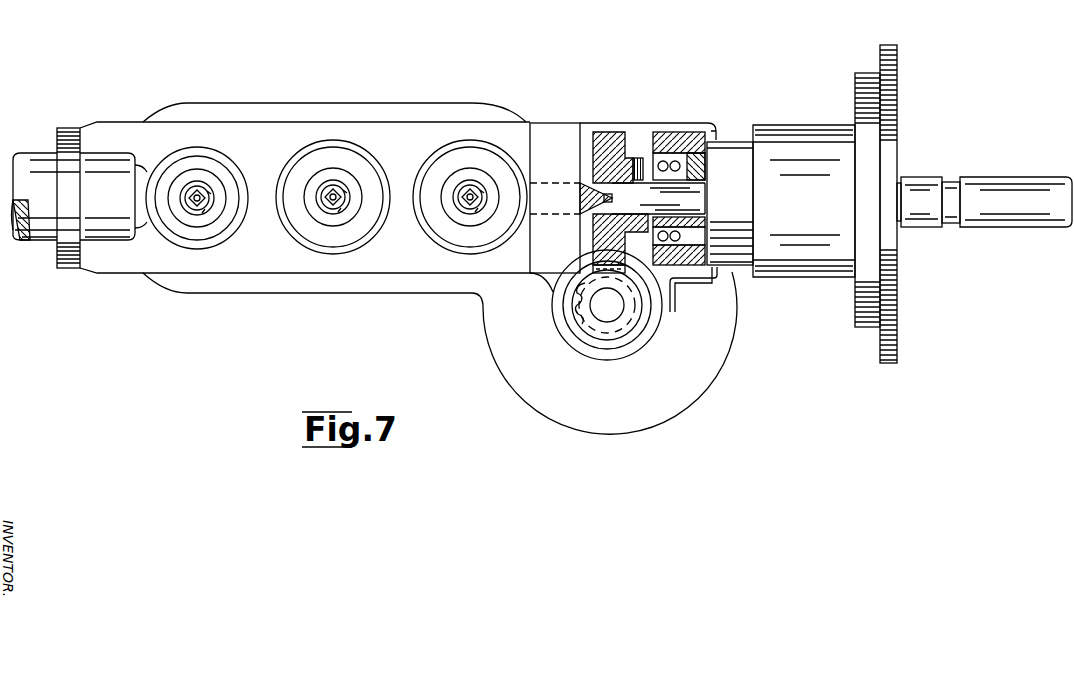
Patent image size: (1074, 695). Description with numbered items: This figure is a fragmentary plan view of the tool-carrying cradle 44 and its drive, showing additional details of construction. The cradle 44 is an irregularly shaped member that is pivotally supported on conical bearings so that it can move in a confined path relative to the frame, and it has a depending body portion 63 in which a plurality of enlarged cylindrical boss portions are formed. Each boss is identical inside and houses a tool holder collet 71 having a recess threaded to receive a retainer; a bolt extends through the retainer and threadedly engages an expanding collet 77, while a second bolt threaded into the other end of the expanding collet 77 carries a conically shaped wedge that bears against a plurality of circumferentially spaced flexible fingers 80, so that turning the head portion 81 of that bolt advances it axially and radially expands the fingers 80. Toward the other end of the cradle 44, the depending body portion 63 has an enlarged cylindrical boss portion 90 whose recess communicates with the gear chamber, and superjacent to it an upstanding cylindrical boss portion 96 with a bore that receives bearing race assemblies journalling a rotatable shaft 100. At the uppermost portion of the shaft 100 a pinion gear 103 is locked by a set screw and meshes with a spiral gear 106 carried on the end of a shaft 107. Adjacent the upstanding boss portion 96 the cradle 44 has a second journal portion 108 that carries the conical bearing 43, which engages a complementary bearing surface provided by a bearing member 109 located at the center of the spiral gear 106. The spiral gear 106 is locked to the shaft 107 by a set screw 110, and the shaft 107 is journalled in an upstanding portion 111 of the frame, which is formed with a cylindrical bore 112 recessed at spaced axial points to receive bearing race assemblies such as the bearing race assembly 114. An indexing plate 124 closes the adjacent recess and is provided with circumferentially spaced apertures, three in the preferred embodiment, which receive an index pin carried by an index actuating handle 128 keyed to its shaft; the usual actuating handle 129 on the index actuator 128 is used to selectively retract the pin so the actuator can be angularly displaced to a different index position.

The cradle 44 is at (65, 127).
The depending body portion 63 is at (327, 294).
The tool holder collet 71 is at (205, 160).
The expanding collet 77 is at (213, 186).
The flexible fingers 80 is at (208, 208).
The head portion 81 is at (187, 208).
The second journal portion 108 is at (538, 130).
The conical bearing 43 is at (582, 182).
The bearing member 109 is at (607, 188).
The spiral gear 106 is at (597, 240).
The set screw 110 is at (638, 154).
The shaft 107 is at (697, 198).
The bearing race assembly 114 is at (682, 160).
The cylindrical bore 112 is at (700, 170).
The upstanding portion 111 is at (790, 140).
The indexing plate 124 is at (883, 127).
The index actuating handle 128 is at (915, 193).
The actuating handle 129 is at (1005, 190).
The enlarged cylindrical boss portion 90 is at (698, 392).
The upstanding cylindrical boss portion 96 is at (615, 362).
The rotatable shaft 100 is at (605, 312).
The pinion gear 103 is at (575, 307).